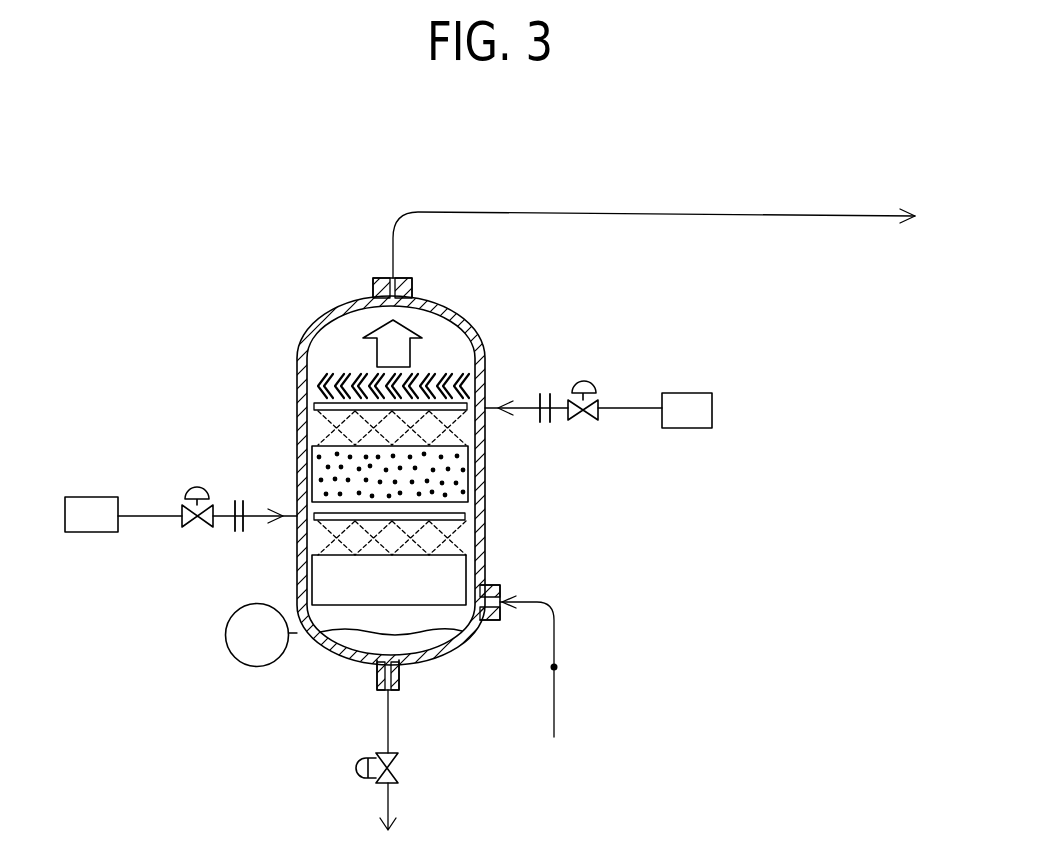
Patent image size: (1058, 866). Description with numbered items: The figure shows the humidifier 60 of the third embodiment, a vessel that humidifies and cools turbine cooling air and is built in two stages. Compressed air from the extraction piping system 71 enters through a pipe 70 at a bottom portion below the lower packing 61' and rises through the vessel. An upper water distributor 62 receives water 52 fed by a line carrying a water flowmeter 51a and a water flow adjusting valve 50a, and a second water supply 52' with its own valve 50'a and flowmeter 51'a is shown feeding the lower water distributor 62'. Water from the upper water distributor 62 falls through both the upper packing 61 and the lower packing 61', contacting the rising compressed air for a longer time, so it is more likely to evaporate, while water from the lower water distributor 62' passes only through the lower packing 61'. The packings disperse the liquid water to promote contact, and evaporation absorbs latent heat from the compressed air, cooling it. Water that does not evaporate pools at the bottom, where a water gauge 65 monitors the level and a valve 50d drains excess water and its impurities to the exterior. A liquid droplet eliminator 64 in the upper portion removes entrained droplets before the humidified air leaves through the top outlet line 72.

The humidifier 60 is at (483, 273).
The outlet line 72 is at (802, 213).
The liquid droplet eliminator 64 is at (314, 376).
The water distributor 62 is at (352, 417).
The packing 61 is at (425, 474).
The lower water distributor 62' is at (432, 523).
The lower packing 61' is at (431, 570).
The pipe 70 is at (533, 604).
The extraction piping system 71 is at (554, 705).
The water gauge 65 is at (225, 633).
The valve 50d is at (357, 770).
The water 52 is at (655, 382).
The water flow adjusting valve 50a is at (584, 380).
The water flowmeter 51a is at (545, 393).
The second supply unit 52' is at (123, 479).
The second control valve 50'a is at (177, 476).
The second flow restrictor 51'a is at (255, 479).